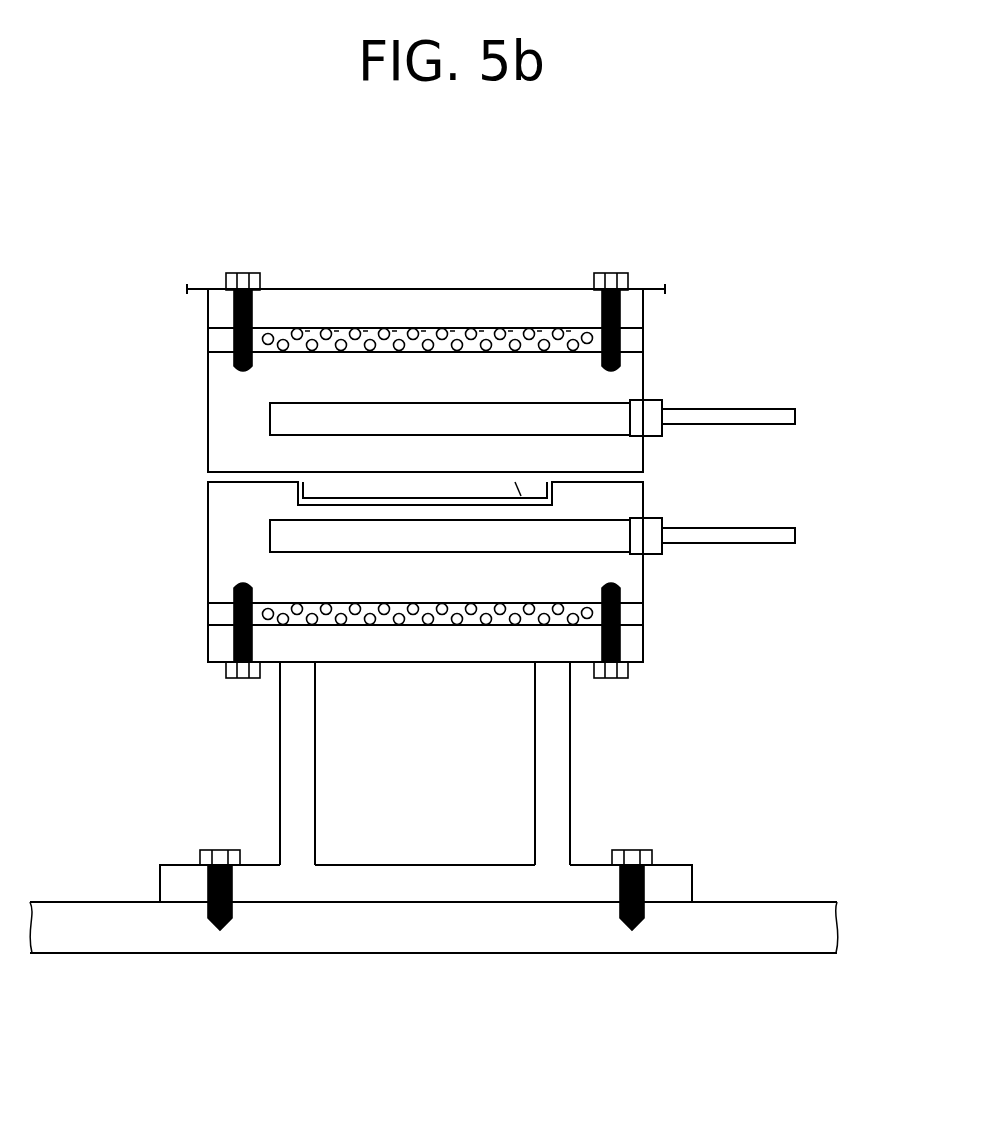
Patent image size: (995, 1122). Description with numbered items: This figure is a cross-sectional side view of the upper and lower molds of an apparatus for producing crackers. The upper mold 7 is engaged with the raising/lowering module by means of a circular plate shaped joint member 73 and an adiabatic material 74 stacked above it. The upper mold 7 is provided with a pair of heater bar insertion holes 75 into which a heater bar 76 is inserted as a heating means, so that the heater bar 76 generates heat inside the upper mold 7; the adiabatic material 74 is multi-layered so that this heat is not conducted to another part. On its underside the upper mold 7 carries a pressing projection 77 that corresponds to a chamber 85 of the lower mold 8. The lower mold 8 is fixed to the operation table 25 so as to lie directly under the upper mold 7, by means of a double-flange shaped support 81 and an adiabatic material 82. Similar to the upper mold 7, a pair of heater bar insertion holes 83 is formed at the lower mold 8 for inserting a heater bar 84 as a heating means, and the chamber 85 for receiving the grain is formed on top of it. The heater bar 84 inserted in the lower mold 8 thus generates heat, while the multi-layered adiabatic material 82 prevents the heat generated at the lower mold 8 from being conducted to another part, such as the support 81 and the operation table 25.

The upper mold 7 is at (180, 415).
The lower mold 8 is at (180, 545).
The operation table 25 is at (775, 923).
The joint member 73 is at (448, 303).
The adiabatic material 74 is at (520, 331).
The heater bar insertion hole 75 is at (550, 400).
The heater bar 76 is at (625, 415).
The pressing projection 77 is at (530, 512).
The double-flange shaped support 81 is at (555, 763).
The adiabatic material 82 is at (550, 620).
The heater bar insertion hole 83 is at (607, 552).
The heater bar 84 is at (630, 533).
The chamber 85 is at (322, 497).